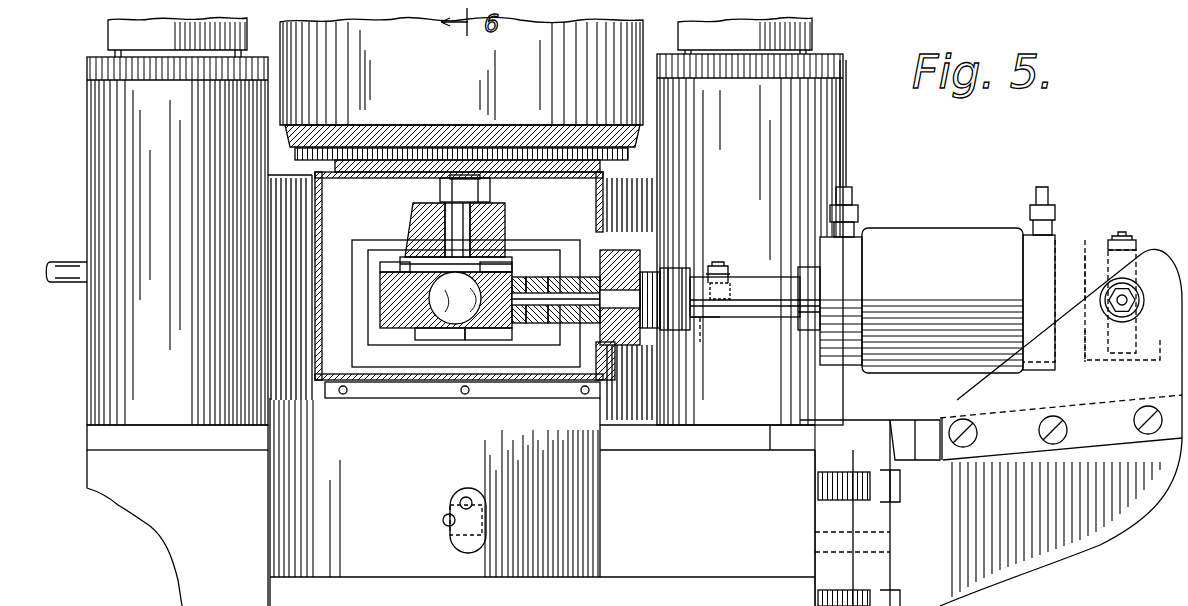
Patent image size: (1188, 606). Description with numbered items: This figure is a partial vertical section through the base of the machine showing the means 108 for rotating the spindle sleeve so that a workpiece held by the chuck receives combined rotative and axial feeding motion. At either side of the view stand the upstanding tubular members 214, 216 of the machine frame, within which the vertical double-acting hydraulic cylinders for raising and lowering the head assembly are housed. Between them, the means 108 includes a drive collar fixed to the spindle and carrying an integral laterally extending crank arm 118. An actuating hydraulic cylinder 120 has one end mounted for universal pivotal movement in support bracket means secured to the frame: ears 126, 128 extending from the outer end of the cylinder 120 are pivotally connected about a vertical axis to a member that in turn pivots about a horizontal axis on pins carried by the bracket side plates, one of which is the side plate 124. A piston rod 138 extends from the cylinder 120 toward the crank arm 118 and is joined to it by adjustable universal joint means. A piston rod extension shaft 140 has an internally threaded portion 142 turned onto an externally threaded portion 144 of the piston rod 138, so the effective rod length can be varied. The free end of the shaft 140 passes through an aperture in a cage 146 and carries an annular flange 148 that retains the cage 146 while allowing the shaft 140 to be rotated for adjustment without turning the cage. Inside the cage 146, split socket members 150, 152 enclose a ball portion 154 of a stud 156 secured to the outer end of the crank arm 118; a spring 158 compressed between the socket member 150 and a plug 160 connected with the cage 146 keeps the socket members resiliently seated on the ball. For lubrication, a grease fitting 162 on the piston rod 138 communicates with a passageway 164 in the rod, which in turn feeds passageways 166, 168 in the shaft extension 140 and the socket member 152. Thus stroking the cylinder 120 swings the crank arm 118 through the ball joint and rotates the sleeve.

The means for rotating the sleeve 108 is at (766, 220).
The crank arm 118 is at (505, 205).
The actuating hydraulic cylinder 120 is at (939, 228).
The side plate 124 is at (972, 398).
The ear 126 is at (1158, 248).
The ear 128 is at (1136, 360).
The piston rod 138 is at (776, 292).
The piston rod extension shaft 140 is at (578, 348).
The internally threaded portion 142 is at (645, 250).
The externally threaded portion 144 is at (662, 272).
The cage 146 is at (516, 340).
The annular flange 148 is at (510, 266).
The split socket member 150 is at (442, 338).
The split socket member 152 is at (478, 338).
The ball portion 154 is at (440, 302).
The stud 156 is at (462, 222).
The spring 158 is at (390, 296).
The plug 160 is at (382, 279).
The grease fitting 162 is at (718, 263).
The passageway 164 is at (676, 343).
The passageway 166 is at (556, 340).
The passageway 168 is at (535, 340).
The upstanding tubular member 214 is at (848, 163).
The upstanding tubular member 216 is at (116, 222).